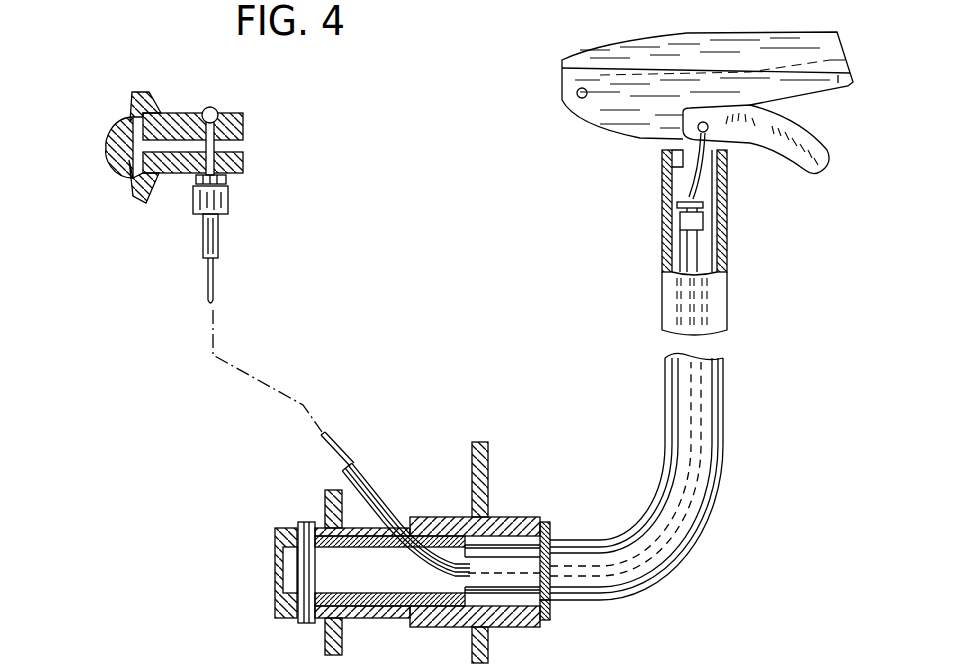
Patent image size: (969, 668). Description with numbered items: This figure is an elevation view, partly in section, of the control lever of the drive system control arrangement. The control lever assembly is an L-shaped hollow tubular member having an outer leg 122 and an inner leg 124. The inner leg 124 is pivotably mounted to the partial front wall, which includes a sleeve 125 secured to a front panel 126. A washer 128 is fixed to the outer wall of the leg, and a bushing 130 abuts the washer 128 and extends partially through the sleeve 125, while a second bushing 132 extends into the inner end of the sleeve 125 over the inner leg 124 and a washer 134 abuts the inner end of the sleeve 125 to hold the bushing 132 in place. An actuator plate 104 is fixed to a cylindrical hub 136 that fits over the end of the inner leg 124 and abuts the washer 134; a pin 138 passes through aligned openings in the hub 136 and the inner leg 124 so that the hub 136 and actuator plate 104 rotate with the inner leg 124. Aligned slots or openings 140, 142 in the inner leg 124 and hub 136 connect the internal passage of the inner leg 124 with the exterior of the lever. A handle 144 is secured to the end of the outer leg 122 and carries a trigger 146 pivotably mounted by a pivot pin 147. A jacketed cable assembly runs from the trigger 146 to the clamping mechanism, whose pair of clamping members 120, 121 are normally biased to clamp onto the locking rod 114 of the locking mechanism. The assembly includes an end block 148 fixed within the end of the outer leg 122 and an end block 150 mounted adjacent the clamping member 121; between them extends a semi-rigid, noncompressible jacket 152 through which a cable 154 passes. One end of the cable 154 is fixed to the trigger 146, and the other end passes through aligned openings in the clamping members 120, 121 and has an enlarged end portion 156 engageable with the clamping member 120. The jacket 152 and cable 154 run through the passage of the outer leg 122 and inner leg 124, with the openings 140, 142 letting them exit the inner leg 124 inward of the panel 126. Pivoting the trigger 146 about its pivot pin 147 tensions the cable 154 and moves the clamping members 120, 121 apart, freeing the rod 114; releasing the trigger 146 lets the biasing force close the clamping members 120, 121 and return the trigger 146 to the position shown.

The actuator plate 104 is at (328, 640).
The locking rod 114 is at (108, 136).
The clamping member 120 is at (183, 113).
The clamping member 121 is at (181, 176).
The outer leg 122 is at (728, 302).
The inner leg 124 is at (390, 608).
The sleeve 125 is at (523, 517).
The front panel 126 is at (489, 470).
The washer 128 is at (550, 612).
The bushing 130 is at (540, 625).
The bushing 132 is at (435, 517).
The washer 134 is at (407, 628).
The cylindrical hub 136 is at (290, 618).
The pin 138 is at (292, 568).
The slot 140 is at (380, 558).
The opening 142 is at (397, 534).
The handle 144 is at (626, 36).
The trigger 146 is at (812, 143).
The pivot pin 147 is at (577, 98).
The end block 148 is at (703, 222).
The end block 150 is at (228, 201).
The jacket 152 is at (218, 240).
The cable 154 is at (338, 463).
The enlarged end portion 156 is at (218, 109).